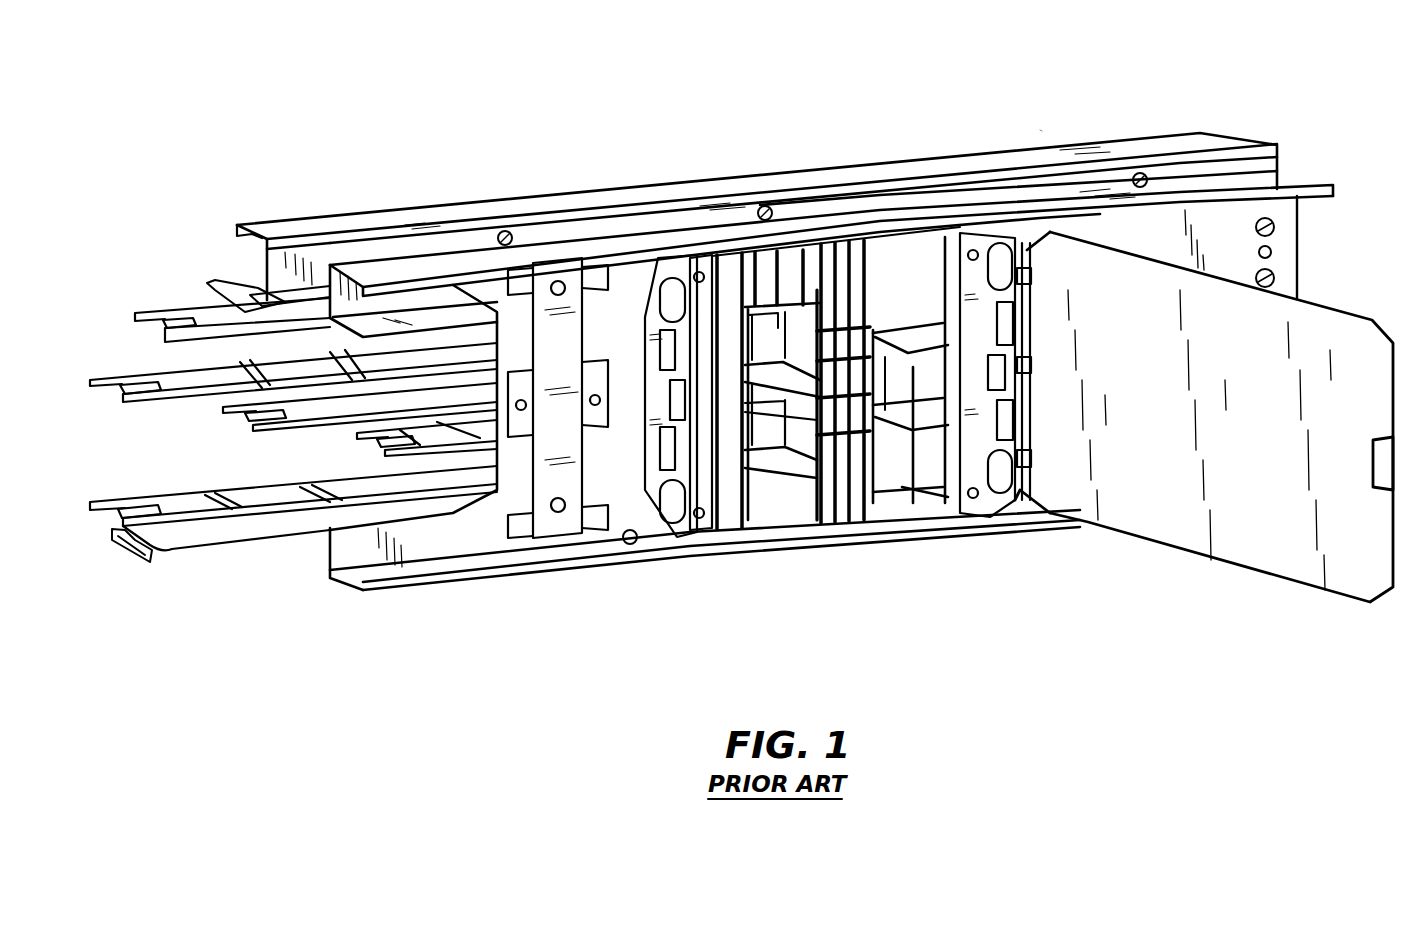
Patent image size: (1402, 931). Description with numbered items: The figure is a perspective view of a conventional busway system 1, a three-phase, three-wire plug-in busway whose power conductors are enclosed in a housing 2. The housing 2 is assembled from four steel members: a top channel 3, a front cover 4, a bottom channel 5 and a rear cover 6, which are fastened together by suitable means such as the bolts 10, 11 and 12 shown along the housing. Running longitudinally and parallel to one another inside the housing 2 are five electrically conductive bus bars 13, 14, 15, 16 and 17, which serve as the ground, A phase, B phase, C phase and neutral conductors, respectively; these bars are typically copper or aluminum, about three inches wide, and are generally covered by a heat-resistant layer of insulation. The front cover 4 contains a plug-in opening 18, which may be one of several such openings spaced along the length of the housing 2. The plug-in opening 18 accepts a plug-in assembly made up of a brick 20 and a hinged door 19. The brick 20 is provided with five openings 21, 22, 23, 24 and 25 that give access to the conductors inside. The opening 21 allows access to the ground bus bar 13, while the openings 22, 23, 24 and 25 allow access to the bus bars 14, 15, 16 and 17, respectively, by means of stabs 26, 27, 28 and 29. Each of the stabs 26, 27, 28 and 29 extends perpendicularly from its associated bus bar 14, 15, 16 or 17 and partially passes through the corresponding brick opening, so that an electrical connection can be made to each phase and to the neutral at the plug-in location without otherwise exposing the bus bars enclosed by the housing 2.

The busway system 1 is at (1034, 126).
The housing 2 is at (571, 188).
The top channel 3 is at (212, 284).
The front cover 4 is at (410, 590).
The bottom channel 5 is at (133, 552).
The rear cover 6 is at (262, 230).
The bolt 10 is at (503, 232).
The bolt 11 is at (780, 312).
The bolt 12 is at (1141, 173).
The ground bus bar 13 is at (177, 310).
The A phase bus bar 14 is at (151, 372).
The B phase bus bar 15 is at (232, 410).
The C phase bus bar 16 is at (360, 438).
The neutral bus bar 17 is at (105, 500).
The plug-in opening 18 is at (655, 262).
The hinged door 19 is at (1257, 553).
The brick 20 is at (680, 530).
The opening 21 is at (1003, 215).
The opening 22 is at (785, 312).
The opening 23 is at (893, 340).
The opening 24 is at (802, 462).
The opening 25 is at (900, 492).
The stab 26 is at (755, 308).
The stab 27 is at (905, 352).
The stab 28 is at (757, 465).
The stab 29 is at (890, 492).